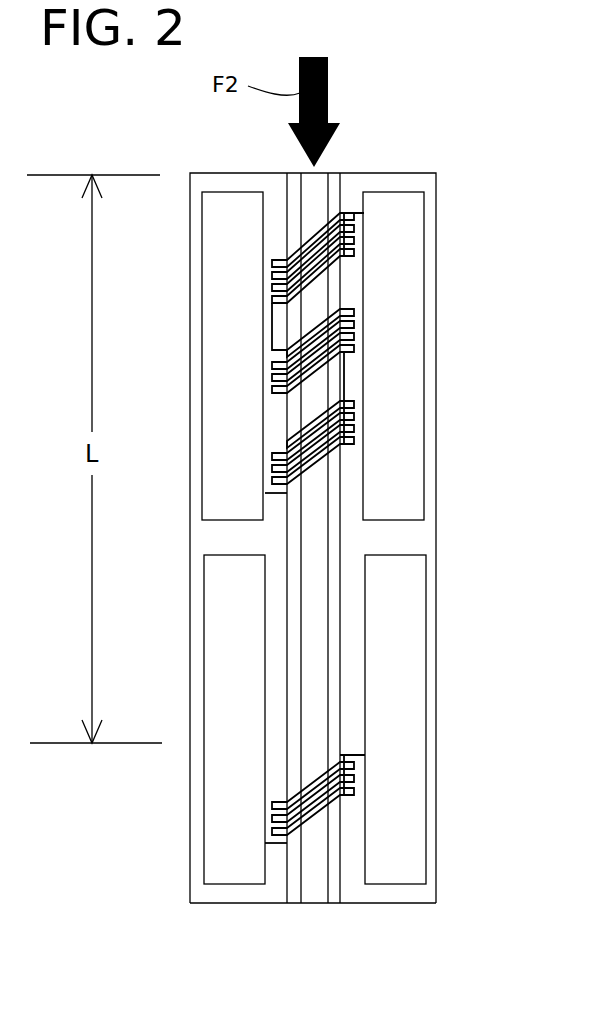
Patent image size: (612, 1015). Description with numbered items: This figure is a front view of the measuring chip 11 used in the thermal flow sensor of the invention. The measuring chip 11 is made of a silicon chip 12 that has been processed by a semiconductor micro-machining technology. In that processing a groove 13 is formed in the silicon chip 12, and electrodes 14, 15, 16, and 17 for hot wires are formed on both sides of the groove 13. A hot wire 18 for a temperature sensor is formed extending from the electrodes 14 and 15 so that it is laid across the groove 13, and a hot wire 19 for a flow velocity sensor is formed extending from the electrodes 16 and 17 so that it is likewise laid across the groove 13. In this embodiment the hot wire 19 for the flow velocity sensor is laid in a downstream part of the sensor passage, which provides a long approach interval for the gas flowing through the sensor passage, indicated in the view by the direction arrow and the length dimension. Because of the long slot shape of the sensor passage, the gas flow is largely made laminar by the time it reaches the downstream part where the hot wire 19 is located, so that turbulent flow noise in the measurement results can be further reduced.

The measuring chip 11 is at (457, 157).
The silicon chip 12 is at (427, 900).
The groove 13 is at (318, 893).
The electrode 14 is at (400, 406).
The electrode 15 is at (205, 300).
The electrode 16 is at (395, 776).
The electrode 17 is at (213, 810).
The hot wire for temperature sensor 18 is at (353, 213).
The hot wire for flow velocity sensor 19 is at (272, 860).